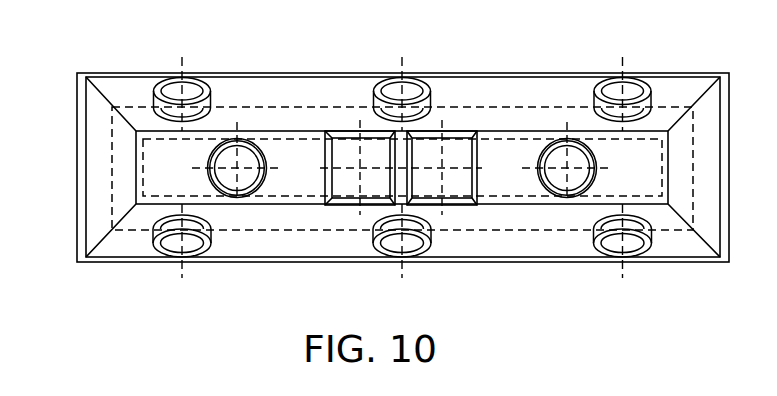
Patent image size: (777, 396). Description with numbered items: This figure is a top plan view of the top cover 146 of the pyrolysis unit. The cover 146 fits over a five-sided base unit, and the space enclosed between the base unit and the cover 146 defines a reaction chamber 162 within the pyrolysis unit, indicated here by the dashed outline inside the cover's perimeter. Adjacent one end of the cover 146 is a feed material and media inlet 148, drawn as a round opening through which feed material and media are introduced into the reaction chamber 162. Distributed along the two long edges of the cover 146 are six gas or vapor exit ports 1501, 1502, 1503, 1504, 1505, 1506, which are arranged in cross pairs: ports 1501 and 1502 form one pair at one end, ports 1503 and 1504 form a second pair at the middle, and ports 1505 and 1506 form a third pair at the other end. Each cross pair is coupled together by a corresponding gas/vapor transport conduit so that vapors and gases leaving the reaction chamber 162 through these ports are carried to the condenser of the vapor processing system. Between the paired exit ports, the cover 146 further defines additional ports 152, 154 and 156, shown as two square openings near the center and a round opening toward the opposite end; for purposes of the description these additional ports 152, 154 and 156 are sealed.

The top cover 146 is at (77, 185).
The feed material and media inlet 148 is at (208, 162).
The gas/vapor exit port 1501 is at (210, 235).
The gas/vapor exit port 1502 is at (157, 87).
The gas/vapor exit port 1503 is at (432, 240).
The gas/vapor exit port 1504 is at (410, 78).
The gas/vapor exit port 1505 is at (652, 243).
The gas/vapor exit port 1506 is at (652, 93).
The additional port 152 is at (340, 130).
The additional port 154 is at (470, 130).
The additional port 156 is at (595, 162).
The reaction chamber 162 is at (112, 120).